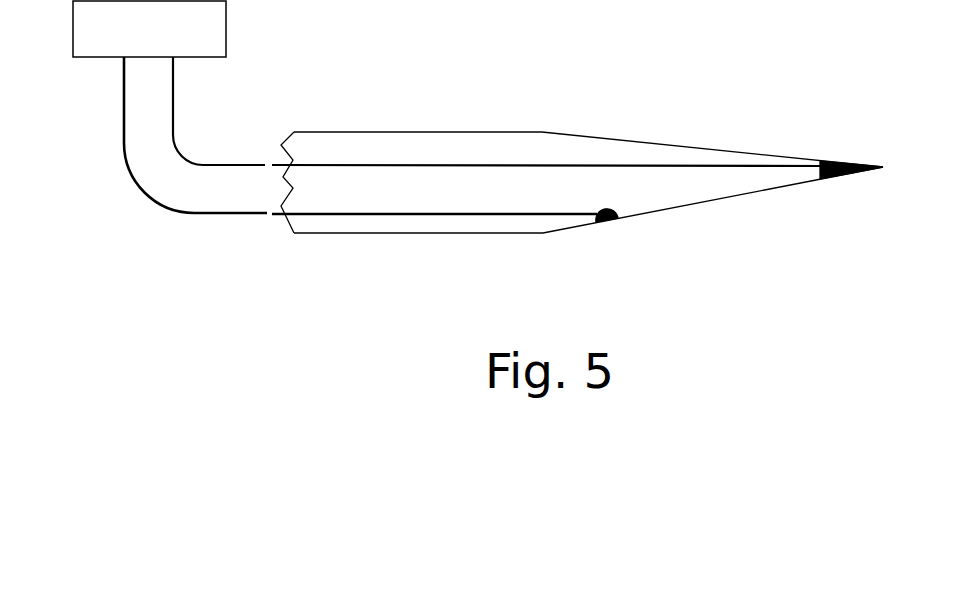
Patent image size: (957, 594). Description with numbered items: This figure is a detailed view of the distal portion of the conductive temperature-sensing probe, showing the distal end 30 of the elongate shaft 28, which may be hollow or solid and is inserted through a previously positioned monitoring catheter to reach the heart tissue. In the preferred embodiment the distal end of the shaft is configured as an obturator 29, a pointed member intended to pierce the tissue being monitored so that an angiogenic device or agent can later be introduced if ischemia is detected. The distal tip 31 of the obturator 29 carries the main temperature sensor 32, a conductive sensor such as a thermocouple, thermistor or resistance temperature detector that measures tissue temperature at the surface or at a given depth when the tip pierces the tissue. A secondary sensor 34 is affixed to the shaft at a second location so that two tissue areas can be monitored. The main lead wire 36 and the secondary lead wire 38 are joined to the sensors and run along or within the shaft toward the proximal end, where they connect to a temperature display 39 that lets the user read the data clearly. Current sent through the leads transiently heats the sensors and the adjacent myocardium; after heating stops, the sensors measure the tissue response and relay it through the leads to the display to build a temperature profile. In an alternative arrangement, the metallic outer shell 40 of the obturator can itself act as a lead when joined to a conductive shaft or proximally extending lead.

The elongate shaft 28 is at (395, 223).
The obturator 29 is at (752, 195).
The distal end of the shaft 30 is at (569, 112).
The distal tip 31 is at (838, 151).
The main temperature sensor 32 is at (843, 176).
The secondary sensor 34 is at (123, 107).
The main lead wire 36 is at (173, 125).
The secondary lead wire 38 is at (490, 217).
The temperature display 39 is at (228, 30).
The metallic outer shell 40 is at (323, 233).